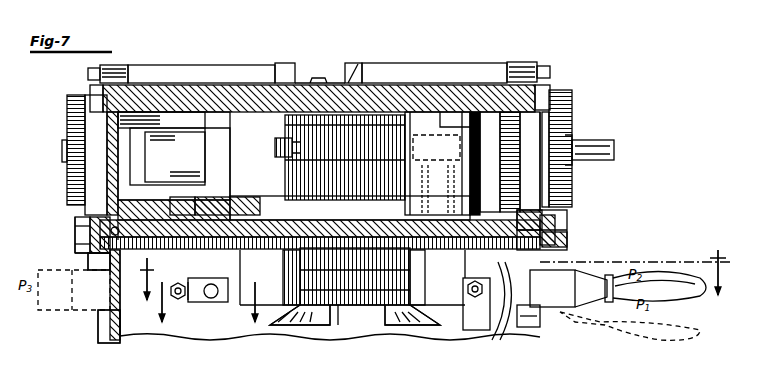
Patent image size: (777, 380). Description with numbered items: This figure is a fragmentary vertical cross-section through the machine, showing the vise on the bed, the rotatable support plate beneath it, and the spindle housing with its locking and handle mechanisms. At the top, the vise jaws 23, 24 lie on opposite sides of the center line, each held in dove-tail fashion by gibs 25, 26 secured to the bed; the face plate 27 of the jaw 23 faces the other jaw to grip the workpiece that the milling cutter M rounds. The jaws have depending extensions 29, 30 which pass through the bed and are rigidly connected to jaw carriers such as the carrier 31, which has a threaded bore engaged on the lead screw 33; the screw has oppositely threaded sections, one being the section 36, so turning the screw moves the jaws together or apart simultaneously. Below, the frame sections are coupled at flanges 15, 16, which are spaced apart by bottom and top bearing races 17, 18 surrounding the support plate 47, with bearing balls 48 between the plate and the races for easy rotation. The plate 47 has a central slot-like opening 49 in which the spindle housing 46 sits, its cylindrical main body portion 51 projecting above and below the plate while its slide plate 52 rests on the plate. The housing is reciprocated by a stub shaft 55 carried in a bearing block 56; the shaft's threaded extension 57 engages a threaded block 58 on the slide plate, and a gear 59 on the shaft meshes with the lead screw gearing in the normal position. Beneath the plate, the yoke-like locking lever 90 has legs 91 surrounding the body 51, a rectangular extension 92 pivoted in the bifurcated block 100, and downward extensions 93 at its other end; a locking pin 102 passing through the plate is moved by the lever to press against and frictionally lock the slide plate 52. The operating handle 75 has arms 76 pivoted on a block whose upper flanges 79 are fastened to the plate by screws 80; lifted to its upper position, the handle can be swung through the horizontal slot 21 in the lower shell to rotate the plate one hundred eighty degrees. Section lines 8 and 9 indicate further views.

The jaw 23 is at (128, 70).
The gibs 25 is at (214, 64).
The face plate 27 is at (288, 63).
The milling cutter M is at (352, 63).
The gibs 26 is at (414, 63).
The depending extension 30 is at (447, 127).
The jaw 24 is at (522, 62).
The threaded extension 57 is at (552, 94).
The stub shaft 55 is at (548, 125).
The gear 59 is at (575, 142).
The bearing block 56 is at (614, 150).
The depending extension 29 is at (200, 124).
The threaded section 36 is at (205, 152).
The lead screw 33 is at (292, 147).
The jaw carrier 31 is at (262, 168).
The threaded block 58 is at (446, 160).
The bearing balls 48 is at (121, 224).
The locking pin 102 is at (215, 206).
The slot-like opening 49 is at (256, 220).
The upper flange 79 is at (565, 238).
The flange 16 is at (75, 217).
The top bearing race 18 is at (75, 226).
The bottom bearing race 17 is at (75, 244).
The flange 15 is at (78, 257).
The horizontal slot 21 is at (100, 300).
The bifurcated block 100 is at (188, 282).
The section line 8 is at (430, 284).
The section line 9 is at (208, 308).
The rectangular extension 92 is at (186, 301).
The spindle housing 46 is at (275, 267).
The support plate 47 is at (354, 240).
The slide plate 52 is at (377, 236).
The main body portion 51 is at (313, 270).
The locking lever 90 is at (352, 310).
The legs 91 is at (388, 295).
The downwardly projecting extensions 93 is at (466, 318).
The screws 80 is at (500, 300).
The arms 76 is at (518, 310).
The handle 75 is at (690, 297).